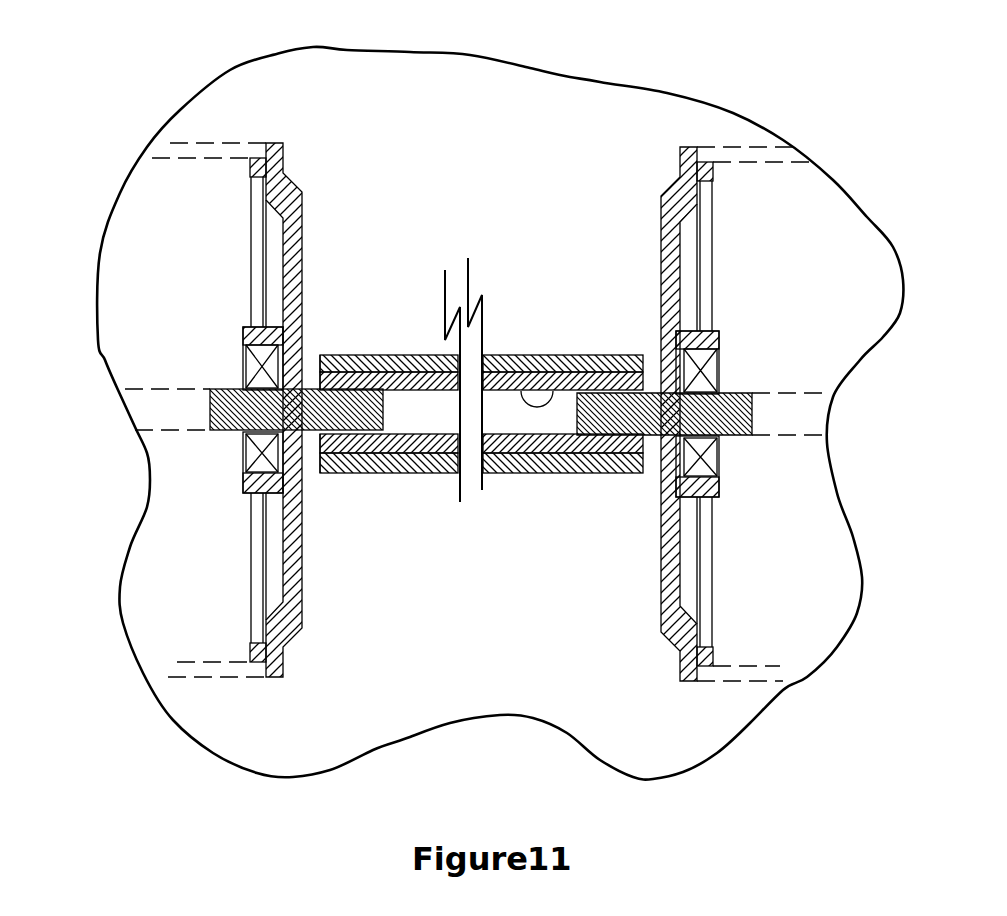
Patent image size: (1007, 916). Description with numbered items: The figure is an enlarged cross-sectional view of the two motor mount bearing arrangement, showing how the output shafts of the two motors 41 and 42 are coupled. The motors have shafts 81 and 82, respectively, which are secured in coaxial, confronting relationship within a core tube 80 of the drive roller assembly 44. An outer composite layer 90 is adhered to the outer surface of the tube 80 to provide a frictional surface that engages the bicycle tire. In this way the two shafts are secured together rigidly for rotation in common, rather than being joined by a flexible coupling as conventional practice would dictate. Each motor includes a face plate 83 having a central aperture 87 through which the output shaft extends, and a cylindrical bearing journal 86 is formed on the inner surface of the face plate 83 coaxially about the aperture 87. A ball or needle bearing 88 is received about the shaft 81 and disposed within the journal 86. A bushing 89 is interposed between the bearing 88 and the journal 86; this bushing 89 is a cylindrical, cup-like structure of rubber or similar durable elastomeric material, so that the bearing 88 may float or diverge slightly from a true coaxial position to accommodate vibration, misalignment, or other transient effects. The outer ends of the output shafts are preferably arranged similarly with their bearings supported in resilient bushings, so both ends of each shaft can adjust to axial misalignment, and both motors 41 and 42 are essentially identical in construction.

The motor 41 is at (264, 342).
The motor 42 is at (757, 132).
The drive roller assembly 44 is at (507, 296).
The core tube 80 is at (568, 355).
The shaft 81 is at (357, 455).
The shaft 82 is at (622, 470).
The face plate 83 is at (297, 188).
The cylindrical bearing journal 86 is at (248, 325).
The central aperture 87 is at (310, 352).
The ball or needle bearing 88 is at (243, 371).
The bushing 89 is at (243, 344).
The outer composite layer 90 is at (538, 475).